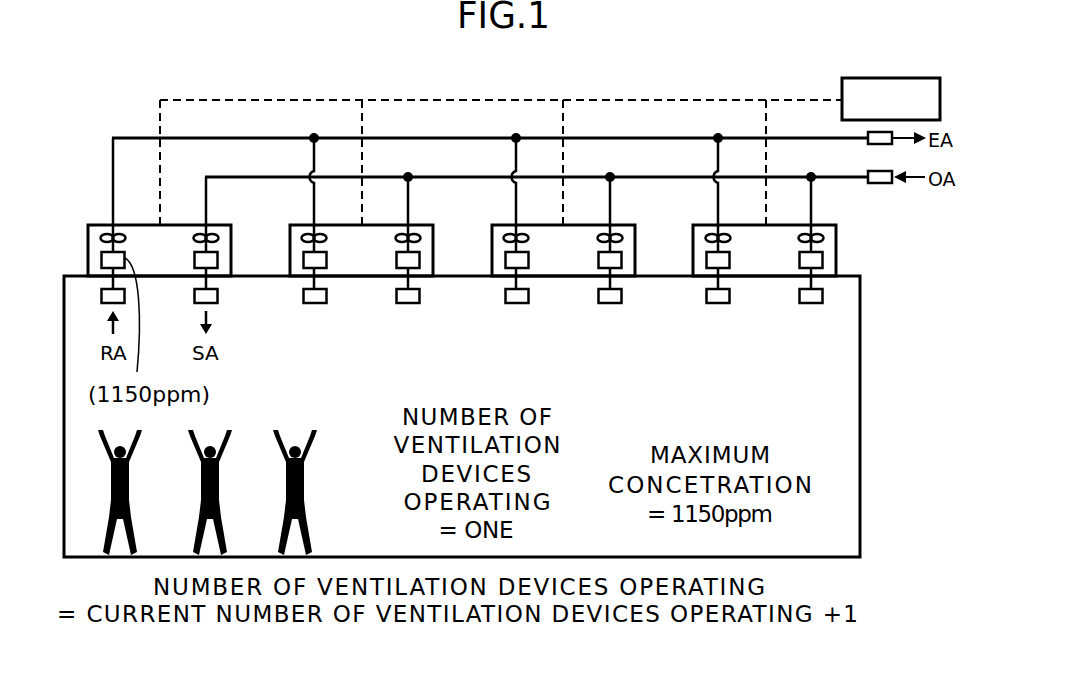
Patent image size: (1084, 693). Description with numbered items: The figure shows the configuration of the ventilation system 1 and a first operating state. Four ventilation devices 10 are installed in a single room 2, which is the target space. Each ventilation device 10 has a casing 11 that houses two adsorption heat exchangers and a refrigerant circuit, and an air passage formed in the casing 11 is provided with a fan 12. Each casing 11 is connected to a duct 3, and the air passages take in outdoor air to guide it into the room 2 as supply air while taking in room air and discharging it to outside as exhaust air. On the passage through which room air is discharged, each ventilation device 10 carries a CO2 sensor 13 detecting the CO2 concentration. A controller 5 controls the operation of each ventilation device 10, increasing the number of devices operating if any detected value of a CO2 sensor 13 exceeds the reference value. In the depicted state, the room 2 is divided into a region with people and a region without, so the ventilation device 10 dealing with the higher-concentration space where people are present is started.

The ventilation system 1 is at (740, 78).
The room 2 is at (861, 391).
The duct 3 is at (663, 177).
The controller 5 is at (895, 78).
The ventilation device 10 is at (443, 231).
The casing 11 is at (527, 212).
The fan 12 is at (462, 192).
The CO2 sensor 13 is at (434, 275).